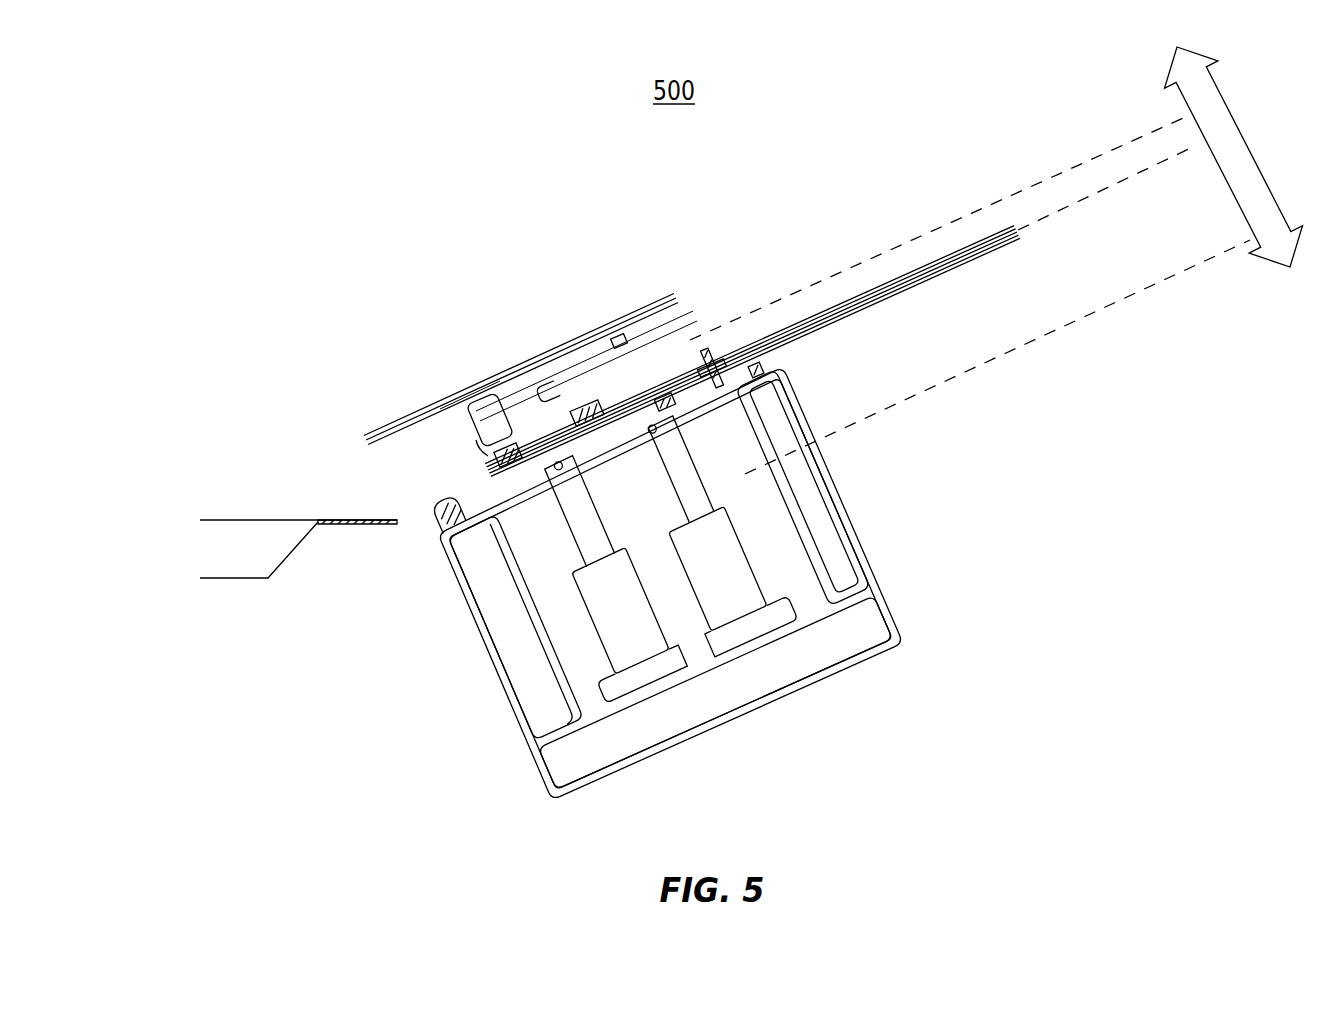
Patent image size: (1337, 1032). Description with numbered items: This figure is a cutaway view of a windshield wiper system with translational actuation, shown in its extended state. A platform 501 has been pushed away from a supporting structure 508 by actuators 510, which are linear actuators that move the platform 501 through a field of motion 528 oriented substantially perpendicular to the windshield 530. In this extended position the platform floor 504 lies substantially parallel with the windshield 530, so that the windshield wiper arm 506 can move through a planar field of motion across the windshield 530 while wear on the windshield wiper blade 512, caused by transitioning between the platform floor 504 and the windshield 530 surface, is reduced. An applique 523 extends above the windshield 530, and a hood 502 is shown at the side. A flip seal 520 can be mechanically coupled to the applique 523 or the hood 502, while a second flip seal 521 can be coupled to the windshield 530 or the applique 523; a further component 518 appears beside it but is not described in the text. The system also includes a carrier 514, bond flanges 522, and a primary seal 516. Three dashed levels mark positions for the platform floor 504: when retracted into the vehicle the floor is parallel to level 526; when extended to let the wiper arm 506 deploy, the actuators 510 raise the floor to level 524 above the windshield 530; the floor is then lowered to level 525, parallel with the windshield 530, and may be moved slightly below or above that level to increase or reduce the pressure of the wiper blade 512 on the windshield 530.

The platform 501 is at (630, 434).
The hood 502 is at (316, 521).
The platform floor 504 is at (655, 388).
The windshield wiper arm 506 is at (548, 378).
The structure 508 is at (478, 645).
The actuators 510 is at (633, 643).
The windshield wiper blade 512 is at (590, 398).
The carrier 514 is at (483, 438).
The primary seal 516 is at (446, 496).
The pin 518 is at (753, 363).
The flip seal 520 is at (364, 442).
The flip seal 521 is at (710, 375).
The bond flanges 522 is at (520, 457).
The applique 523 is at (470, 388).
The level 524 is at (975, 208).
The level 525 is at (1030, 223).
The level 526 is at (1138, 288).
The field of motion 528 is at (1213, 168).
The windshield 530 is at (897, 300).